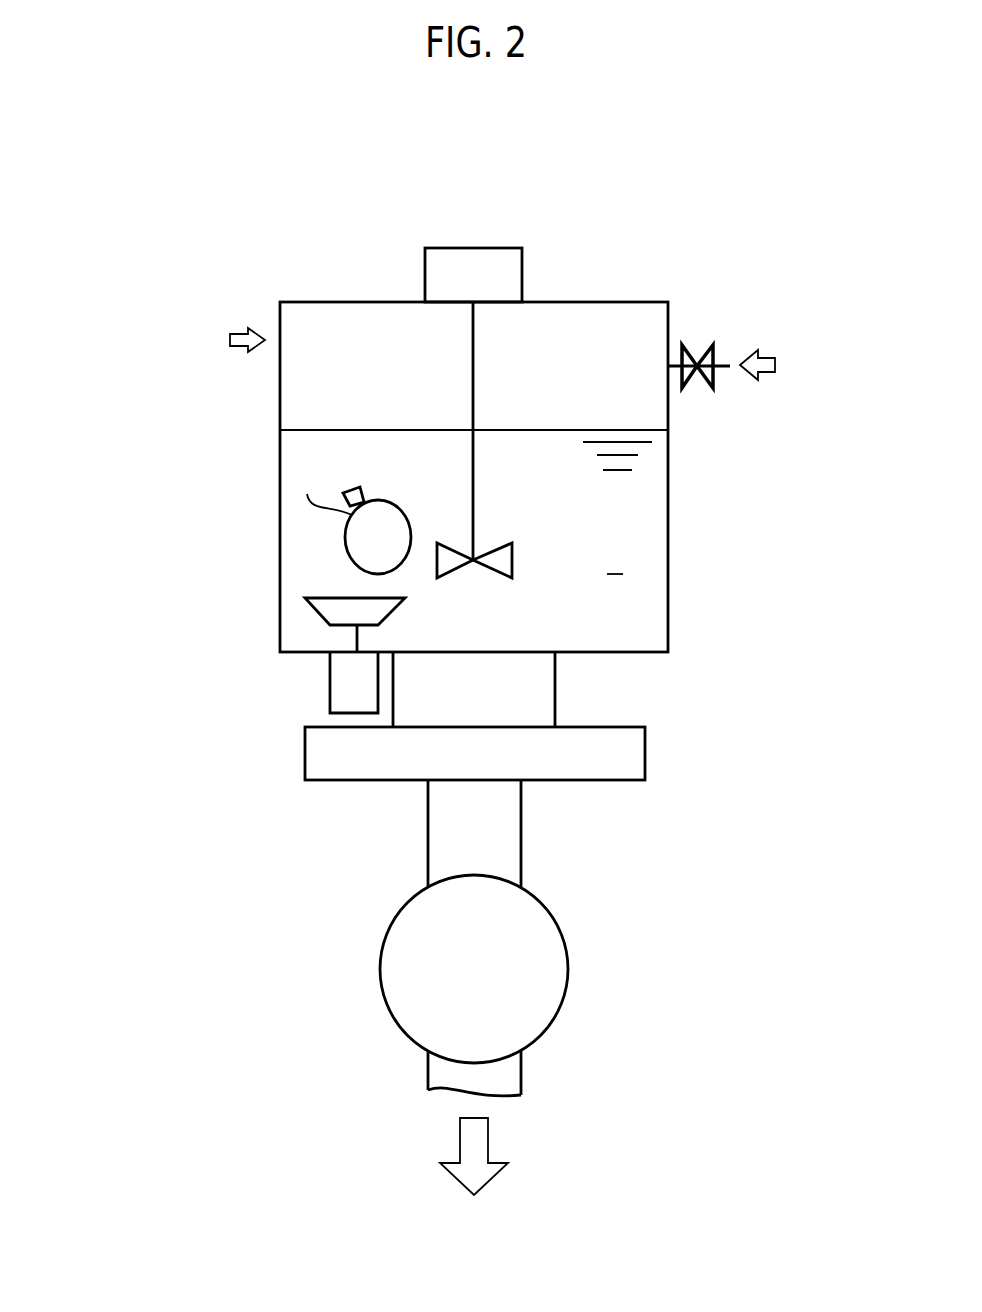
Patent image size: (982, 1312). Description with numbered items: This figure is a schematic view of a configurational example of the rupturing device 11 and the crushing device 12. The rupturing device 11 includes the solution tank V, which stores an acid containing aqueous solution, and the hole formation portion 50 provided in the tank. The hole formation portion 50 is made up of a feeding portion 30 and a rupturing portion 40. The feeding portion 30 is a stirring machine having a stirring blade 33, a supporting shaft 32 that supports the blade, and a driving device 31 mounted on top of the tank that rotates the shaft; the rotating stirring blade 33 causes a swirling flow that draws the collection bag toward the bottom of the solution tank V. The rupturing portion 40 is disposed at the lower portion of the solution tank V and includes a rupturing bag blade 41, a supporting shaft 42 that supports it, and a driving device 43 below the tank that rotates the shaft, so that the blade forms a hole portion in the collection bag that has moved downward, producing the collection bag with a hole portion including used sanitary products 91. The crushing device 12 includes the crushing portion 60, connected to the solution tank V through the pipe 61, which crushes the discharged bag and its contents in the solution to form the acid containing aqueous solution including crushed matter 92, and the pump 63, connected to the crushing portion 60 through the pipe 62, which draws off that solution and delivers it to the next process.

The rupturing device 11 is at (722, 266).
The crushing device 12 is at (222, 772).
The feeding portion 30 is at (398, 287).
The driving device 31 is at (522, 268).
The supporting shaft 32 is at (475, 375).
The stirring blade 33 is at (498, 542).
The rupturing portion 40 is at (255, 560).
The rupturing bag blade 41 is at (313, 617).
The supporting shaft 42 is at (357, 645).
The driving device 43 is at (330, 682).
The hole formation portion 50 is at (90, 385).
The crushing portion 60 is at (645, 752).
The pipe 61 is at (555, 690).
The pipe 62 is at (520, 837).
The pump 63 is at (568, 960).
The collection bag with a hole portion including used sanitary products 91 is at (424, 703).
The acid containing aqueous solution including crushed matter 92 is at (449, 830).
The solution tank V is at (668, 322).